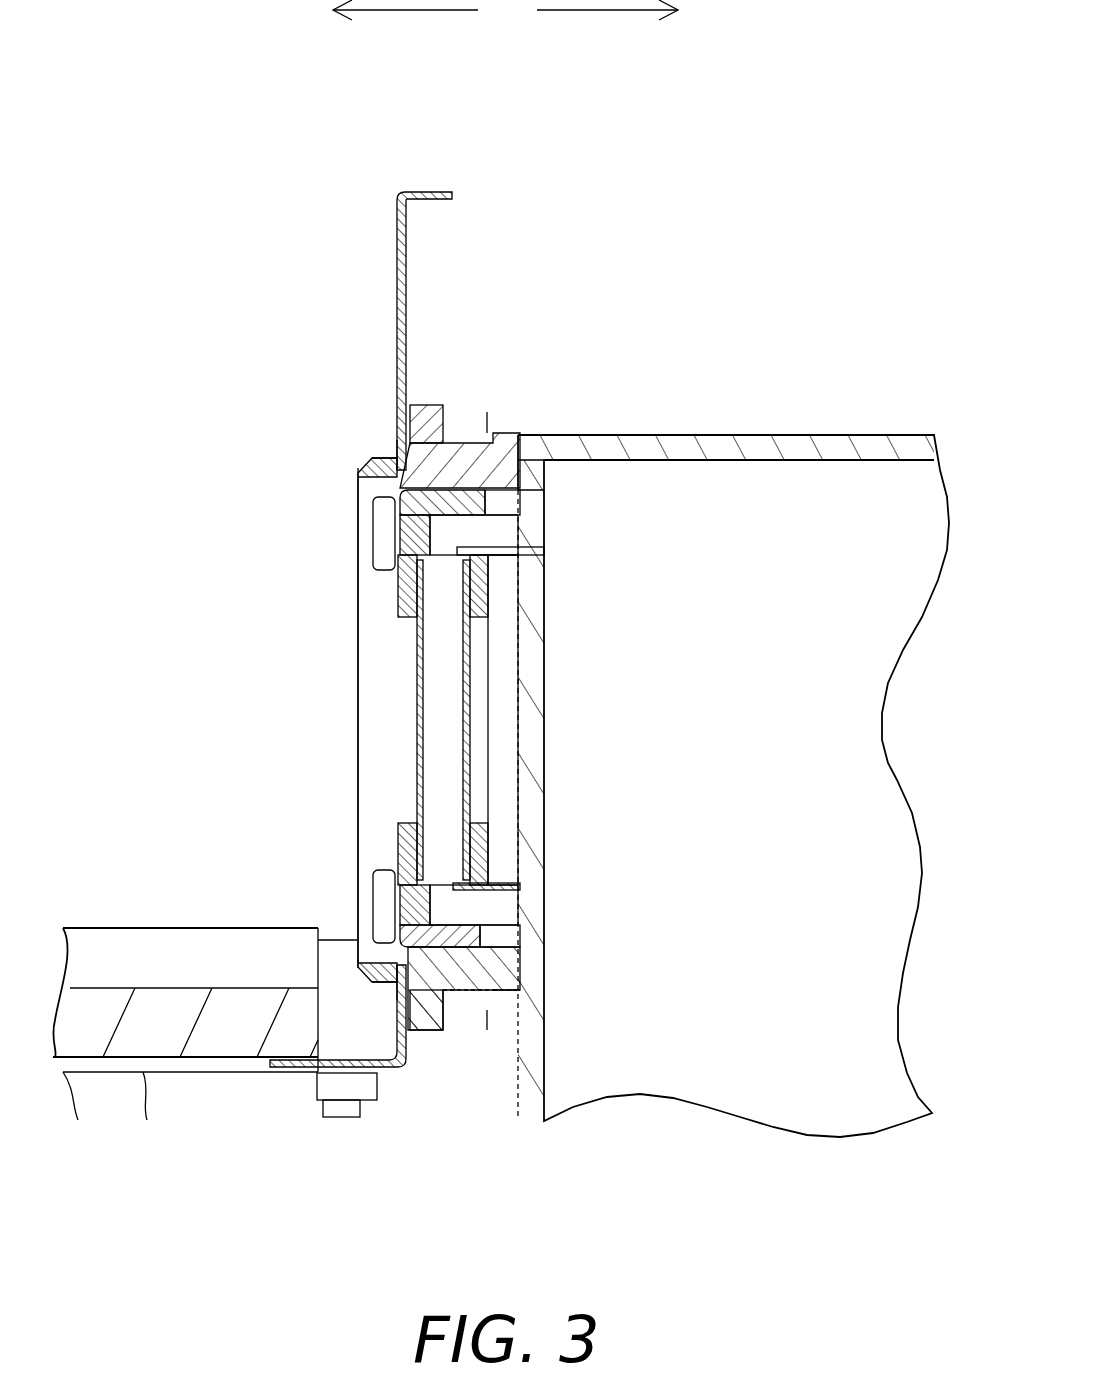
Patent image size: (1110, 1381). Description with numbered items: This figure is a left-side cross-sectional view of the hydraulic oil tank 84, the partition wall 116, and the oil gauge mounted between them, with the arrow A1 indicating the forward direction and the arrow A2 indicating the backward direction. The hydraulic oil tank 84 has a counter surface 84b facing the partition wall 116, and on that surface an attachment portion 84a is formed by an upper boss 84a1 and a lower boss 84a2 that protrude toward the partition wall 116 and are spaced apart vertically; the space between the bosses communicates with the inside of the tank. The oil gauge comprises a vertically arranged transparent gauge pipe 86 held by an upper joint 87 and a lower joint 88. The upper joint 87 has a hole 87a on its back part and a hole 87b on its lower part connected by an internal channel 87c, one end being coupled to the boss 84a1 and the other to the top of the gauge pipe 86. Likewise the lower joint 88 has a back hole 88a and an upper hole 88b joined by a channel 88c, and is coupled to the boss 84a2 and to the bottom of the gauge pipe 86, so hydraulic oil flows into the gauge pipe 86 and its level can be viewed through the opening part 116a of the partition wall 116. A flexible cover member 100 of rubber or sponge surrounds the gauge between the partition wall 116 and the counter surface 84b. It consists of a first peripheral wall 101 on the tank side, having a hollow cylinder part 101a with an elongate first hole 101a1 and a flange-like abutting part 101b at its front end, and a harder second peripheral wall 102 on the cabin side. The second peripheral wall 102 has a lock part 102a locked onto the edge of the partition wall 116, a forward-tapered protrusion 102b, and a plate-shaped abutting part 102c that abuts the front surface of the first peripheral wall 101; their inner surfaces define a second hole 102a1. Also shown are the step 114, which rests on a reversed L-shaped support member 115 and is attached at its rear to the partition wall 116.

The hydraulic oil tank 84 is at (808, 435).
The attachment portion 84a is at (506, 687).
The boss 84a1 is at (523, 470).
The boss 84a2 is at (518, 958).
The counter surface 84b is at (515, 740).
The gauge pipe 86 is at (420, 655).
The upper joint 87 is at (398, 596).
The hole 87a is at (520, 527).
The hole 87b is at (417, 622).
The channel 87c is at (520, 539).
The lower joint 88 is at (398, 840).
The hole 88a is at (522, 912).
The hole 88b is at (417, 803).
The channel 88c is at (435, 912).
The cover member 100 is at (392, 403).
The first peripheral wall 101 is at (678, 256).
The cylinder part 101a is at (490, 432).
The first hole 101a1 is at (374, 503).
The abutting part 101b is at (488, 440).
The second peripheral wall 102 is at (160, 338).
The lock part 102a is at (385, 447).
The second hole 102a1 is at (357, 475).
The protrusion 102b is at (360, 464).
The abutting part 102c is at (394, 452).
The step 114 is at (68, 1100).
The support member 115 is at (143, 1100).
The partition wall 116 is at (396, 250).
The opening part 116a is at (423, 407).
The arrow A1 is at (423, 12).
The arrow A2 is at (603, 12).